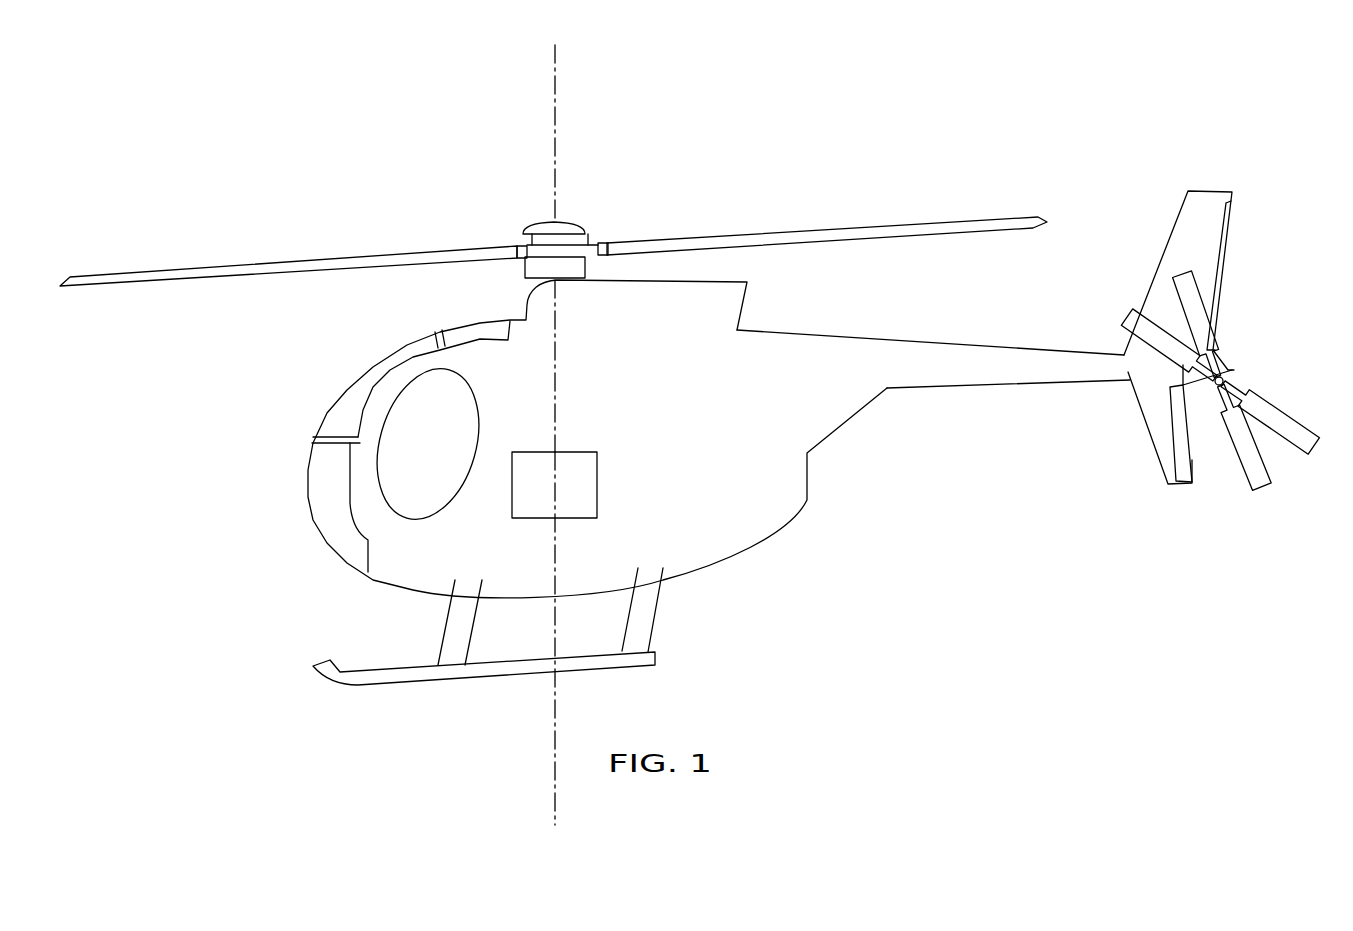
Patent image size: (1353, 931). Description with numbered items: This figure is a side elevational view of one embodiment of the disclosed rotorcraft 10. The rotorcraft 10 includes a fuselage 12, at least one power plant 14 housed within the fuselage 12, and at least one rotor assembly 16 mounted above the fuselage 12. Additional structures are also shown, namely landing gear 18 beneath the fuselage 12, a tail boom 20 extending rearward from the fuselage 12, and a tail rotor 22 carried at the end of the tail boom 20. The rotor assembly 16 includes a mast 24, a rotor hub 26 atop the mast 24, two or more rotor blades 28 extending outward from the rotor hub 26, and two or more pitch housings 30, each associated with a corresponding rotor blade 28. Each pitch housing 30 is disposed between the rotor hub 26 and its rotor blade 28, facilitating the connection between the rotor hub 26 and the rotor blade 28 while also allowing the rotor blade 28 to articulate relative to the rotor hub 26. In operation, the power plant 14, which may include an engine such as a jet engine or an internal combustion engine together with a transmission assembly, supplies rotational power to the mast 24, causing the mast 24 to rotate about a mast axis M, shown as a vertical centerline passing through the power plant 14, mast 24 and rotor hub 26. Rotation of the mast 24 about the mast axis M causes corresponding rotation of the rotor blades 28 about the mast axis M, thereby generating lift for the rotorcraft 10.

The rotorcraft 10 is at (690, 435).
The fuselage 12 is at (328, 407).
The power plant 14 is at (598, 468).
The rotor assembly 16 is at (553, 201).
The landing gear 18 is at (394, 687).
The tail boom 20 is at (1003, 386).
The tail rotor 22 is at (1283, 413).
The mast 24 is at (557, 380).
The rotor hub 26 is at (535, 224).
The rotor blade 28 is at (193, 268).
The pitch housing 30 is at (517, 248).
The mast axis M is at (556, 78).